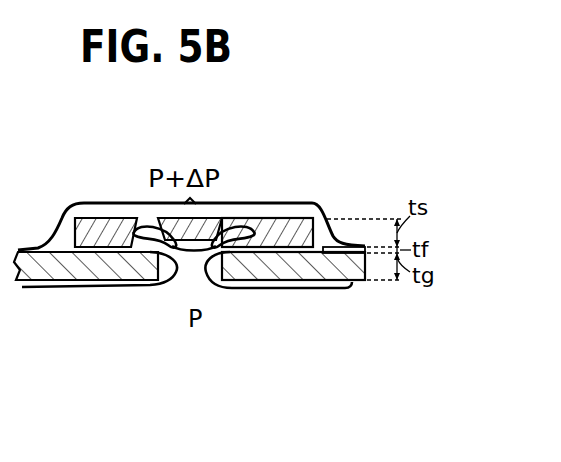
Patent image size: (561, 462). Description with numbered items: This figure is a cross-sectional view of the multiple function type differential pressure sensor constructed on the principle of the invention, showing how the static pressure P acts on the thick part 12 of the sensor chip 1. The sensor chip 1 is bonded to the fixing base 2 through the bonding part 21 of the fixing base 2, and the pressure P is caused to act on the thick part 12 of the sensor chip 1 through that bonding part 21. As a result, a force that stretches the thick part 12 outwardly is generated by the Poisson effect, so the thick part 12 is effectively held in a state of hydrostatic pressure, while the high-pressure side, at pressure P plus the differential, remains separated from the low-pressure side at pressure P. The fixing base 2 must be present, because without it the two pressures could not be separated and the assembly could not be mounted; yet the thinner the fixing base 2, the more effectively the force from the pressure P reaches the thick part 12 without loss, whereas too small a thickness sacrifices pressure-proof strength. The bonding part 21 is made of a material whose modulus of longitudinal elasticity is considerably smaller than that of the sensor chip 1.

The bonding part 21 is at (78, 219).
The thick part 12 is at (112, 229).
The sensor chip 1 is at (210, 222).
The fixing base 2 is at (294, 267).